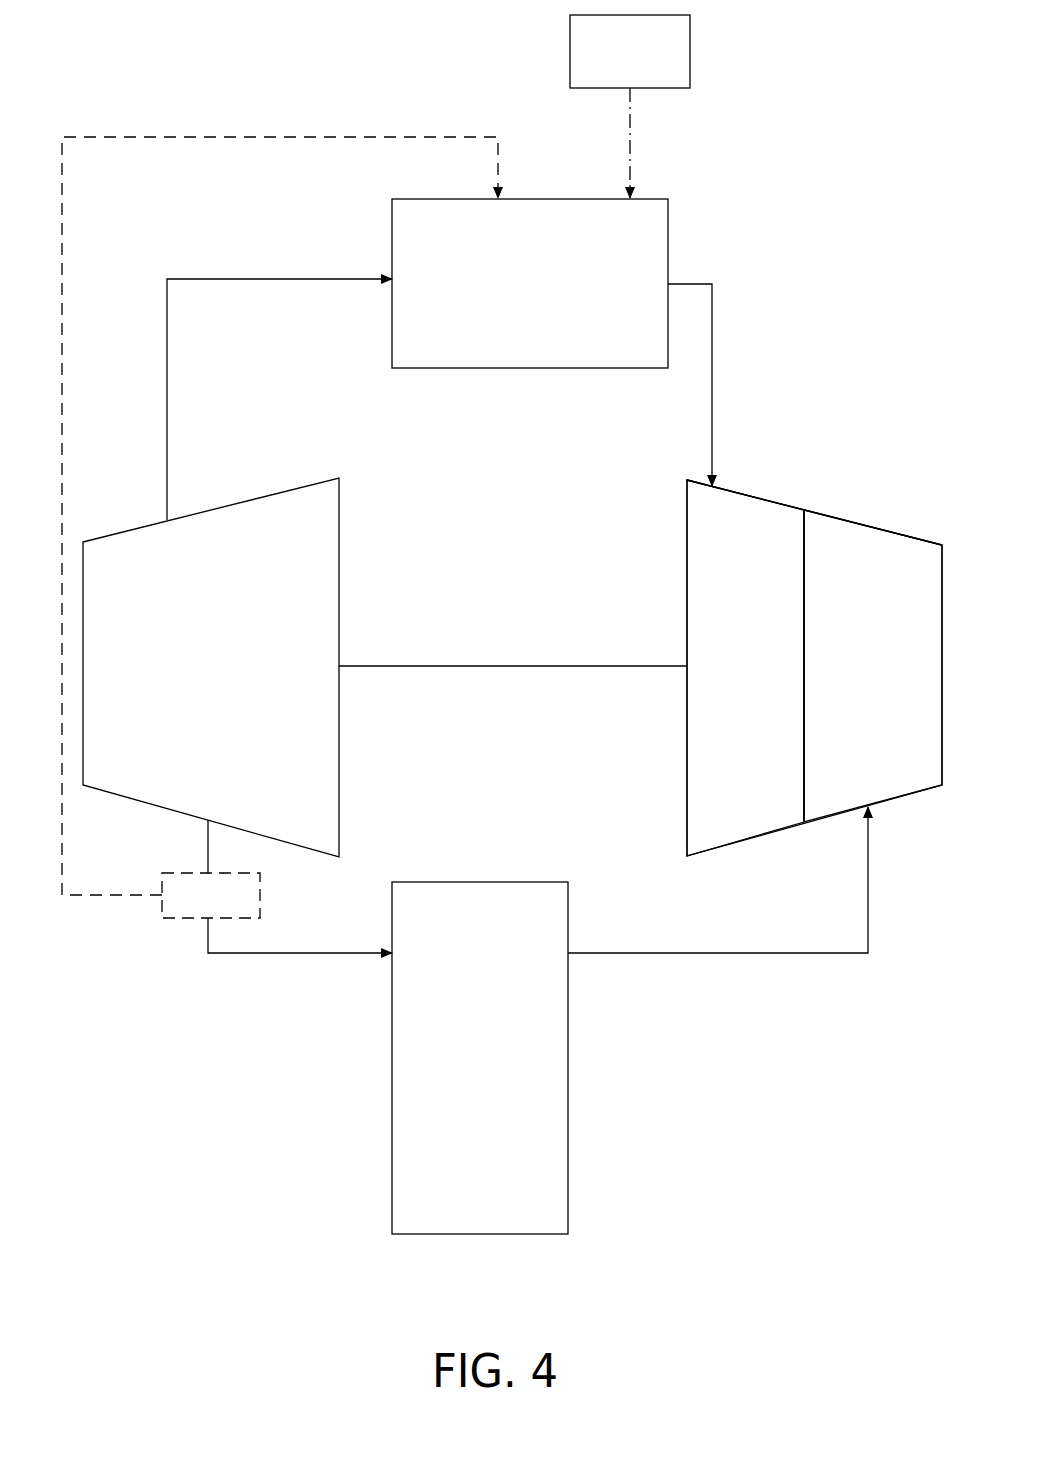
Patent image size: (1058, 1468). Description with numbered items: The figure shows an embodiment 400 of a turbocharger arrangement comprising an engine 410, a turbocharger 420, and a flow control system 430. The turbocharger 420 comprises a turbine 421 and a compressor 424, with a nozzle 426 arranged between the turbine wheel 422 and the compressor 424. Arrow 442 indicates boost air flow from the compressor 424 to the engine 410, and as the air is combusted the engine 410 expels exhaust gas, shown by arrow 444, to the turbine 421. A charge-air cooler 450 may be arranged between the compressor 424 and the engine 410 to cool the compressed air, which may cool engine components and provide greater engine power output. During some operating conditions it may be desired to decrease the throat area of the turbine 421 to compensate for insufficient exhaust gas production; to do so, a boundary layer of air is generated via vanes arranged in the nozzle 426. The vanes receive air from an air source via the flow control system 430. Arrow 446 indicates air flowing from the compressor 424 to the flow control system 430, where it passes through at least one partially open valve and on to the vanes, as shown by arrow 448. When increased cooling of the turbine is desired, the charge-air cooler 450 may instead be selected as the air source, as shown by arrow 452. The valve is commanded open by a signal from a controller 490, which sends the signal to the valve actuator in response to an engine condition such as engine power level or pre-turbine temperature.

The embodiment 400 is at (814, 150).
The engine 410 is at (497, 1067).
The turbocharger 420 is at (858, 432).
The turbine 421 is at (856, 518).
The turbine wheel 422 is at (903, 659).
The compressor 424 is at (228, 664).
The nozzle 426 is at (759, 670).
The flow control system 430 is at (547, 294).
The boost air flow 442 is at (287, 953).
The exhaust gas flow 444 is at (800, 953).
The air flow from compressor to flow control system 446 is at (250, 279).
The air flow to vanes 448 is at (694, 284).
The charge-air cooler 450 is at (228, 907).
The charge-air cooler air source path 452 is at (282, 137).
The controller 490 is at (647, 62).